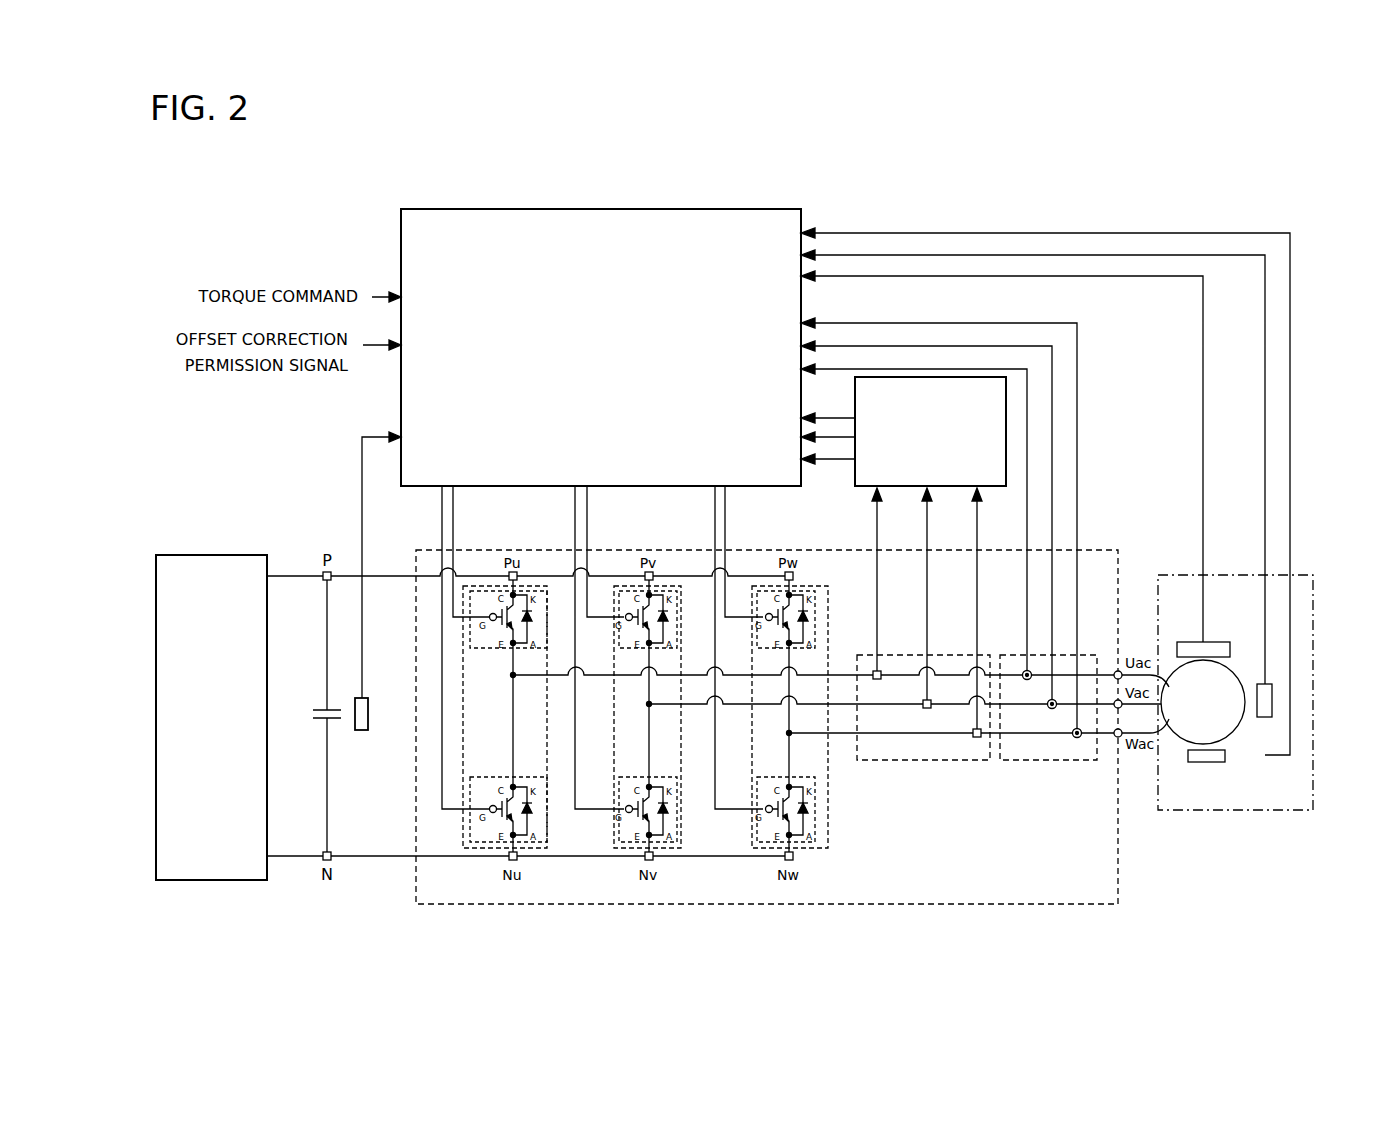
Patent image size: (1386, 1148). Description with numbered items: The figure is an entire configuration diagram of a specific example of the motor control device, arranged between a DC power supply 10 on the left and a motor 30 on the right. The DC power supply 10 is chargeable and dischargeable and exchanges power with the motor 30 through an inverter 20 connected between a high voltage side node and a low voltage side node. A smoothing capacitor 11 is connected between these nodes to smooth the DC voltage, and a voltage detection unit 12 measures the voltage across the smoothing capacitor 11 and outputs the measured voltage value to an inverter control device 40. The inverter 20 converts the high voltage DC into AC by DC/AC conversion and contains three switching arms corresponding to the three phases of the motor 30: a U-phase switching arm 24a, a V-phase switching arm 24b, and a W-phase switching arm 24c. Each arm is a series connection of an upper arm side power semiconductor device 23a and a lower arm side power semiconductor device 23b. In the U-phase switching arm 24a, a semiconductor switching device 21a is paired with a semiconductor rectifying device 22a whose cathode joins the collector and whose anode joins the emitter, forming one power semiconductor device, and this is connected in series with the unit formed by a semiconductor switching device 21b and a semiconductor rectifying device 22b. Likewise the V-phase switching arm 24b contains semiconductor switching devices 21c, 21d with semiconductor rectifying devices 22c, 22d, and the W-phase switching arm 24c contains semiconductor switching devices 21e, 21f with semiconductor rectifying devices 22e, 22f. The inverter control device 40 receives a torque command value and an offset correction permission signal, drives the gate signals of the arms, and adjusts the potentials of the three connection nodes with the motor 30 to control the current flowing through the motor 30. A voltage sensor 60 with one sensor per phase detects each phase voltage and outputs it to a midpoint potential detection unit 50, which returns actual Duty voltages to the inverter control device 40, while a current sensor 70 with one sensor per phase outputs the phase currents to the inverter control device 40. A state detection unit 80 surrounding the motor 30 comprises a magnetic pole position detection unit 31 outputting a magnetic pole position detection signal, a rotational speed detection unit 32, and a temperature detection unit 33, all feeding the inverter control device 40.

The DC power supply 10 is at (240, 556).
The smoothing capacitor 11 is at (331, 709).
The voltage detection unit 12 is at (369, 712).
The inverter 20 is at (490, 552).
The semiconductor switching device 21a is at (500, 628).
The semiconductor switching device 21b is at (500, 800).
The semiconductor switching device 21c is at (621, 622).
The semiconductor switching device 21d is at (621, 804).
The semiconductor switching device 21e is at (759, 622).
The semiconductor switching device 21f is at (759, 806).
The semiconductor rectifying device 22a is at (531, 607).
The semiconductor rectifying device 22b is at (531, 812).
The semiconductor rectifying device 22c is at (667, 607).
The semiconductor rectifying device 22d is at (667, 812).
The semiconductor rectifying device 22e is at (808, 617).
The semiconductor rectifying device 22f is at (808, 812).
The upper arm side power semiconductor device 23a is at (806, 592).
The lower arm side power semiconductor device 23b is at (810, 850).
The U-phase switching arm 24a is at (463, 820).
The V-phase switching arm 24b is at (618, 742).
The W-phase switching arm 24c is at (754, 766).
The motor 30 is at (1232, 668).
The magnetic pole position detection unit 31 is at (1222, 642).
The rotational speed detection unit 32 is at (1266, 718).
The temperature detection unit 33 is at (1206, 763).
The inverter control device 40 is at (784, 489).
The midpoint potential detection unit 50 is at (858, 489).
The voltage sensor 60 is at (897, 762).
The current sensor 70 is at (1012, 762).
The state detection unit 80 is at (1178, 576).